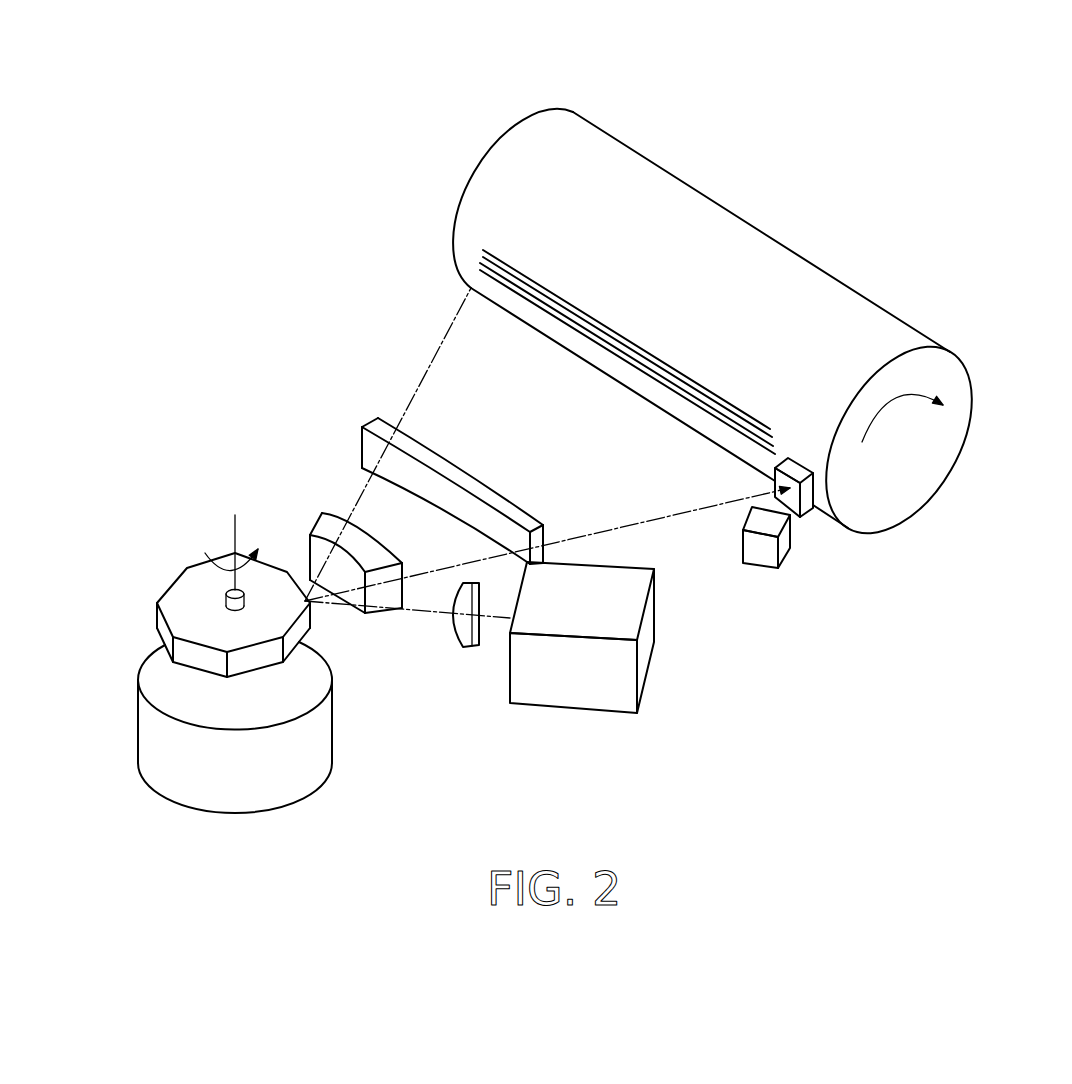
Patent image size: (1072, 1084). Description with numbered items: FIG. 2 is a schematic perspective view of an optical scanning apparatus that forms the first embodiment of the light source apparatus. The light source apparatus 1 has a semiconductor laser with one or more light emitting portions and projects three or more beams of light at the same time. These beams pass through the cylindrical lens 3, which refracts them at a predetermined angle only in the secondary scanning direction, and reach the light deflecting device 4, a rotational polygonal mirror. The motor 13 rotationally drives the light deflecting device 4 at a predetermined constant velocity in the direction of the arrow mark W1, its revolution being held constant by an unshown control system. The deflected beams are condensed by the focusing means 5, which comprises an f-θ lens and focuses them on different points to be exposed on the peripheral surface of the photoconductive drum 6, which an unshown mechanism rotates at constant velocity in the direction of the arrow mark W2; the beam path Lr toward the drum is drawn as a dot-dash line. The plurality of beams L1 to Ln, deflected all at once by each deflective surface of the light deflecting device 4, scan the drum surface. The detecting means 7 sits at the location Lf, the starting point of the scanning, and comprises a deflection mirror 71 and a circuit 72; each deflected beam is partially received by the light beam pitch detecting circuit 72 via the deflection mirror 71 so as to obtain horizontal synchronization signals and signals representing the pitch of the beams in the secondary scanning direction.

The light source apparatus 1 is at (623, 690).
The cylindrical lens 3 is at (463, 637).
The light deflecting device 4 is at (183, 597).
The focusing means 5 is at (350, 422).
The photoconductive drum 6 is at (740, 220).
The detecting means 7 is at (798, 556).
The deflection mirror 71 is at (812, 510).
The light beam pitch detecting circuit 72 is at (776, 568).
The motor 13 is at (315, 735).
The arrow mark w1 W1 is at (244, 540).
The arrow mark w2 W2 is at (902, 400).
The beam of light L1 is at (626, 339).
The beam of light Ln is at (627, 362).
The reflected beam Lr is at (388, 444).
The location Lf is at (547, 543).